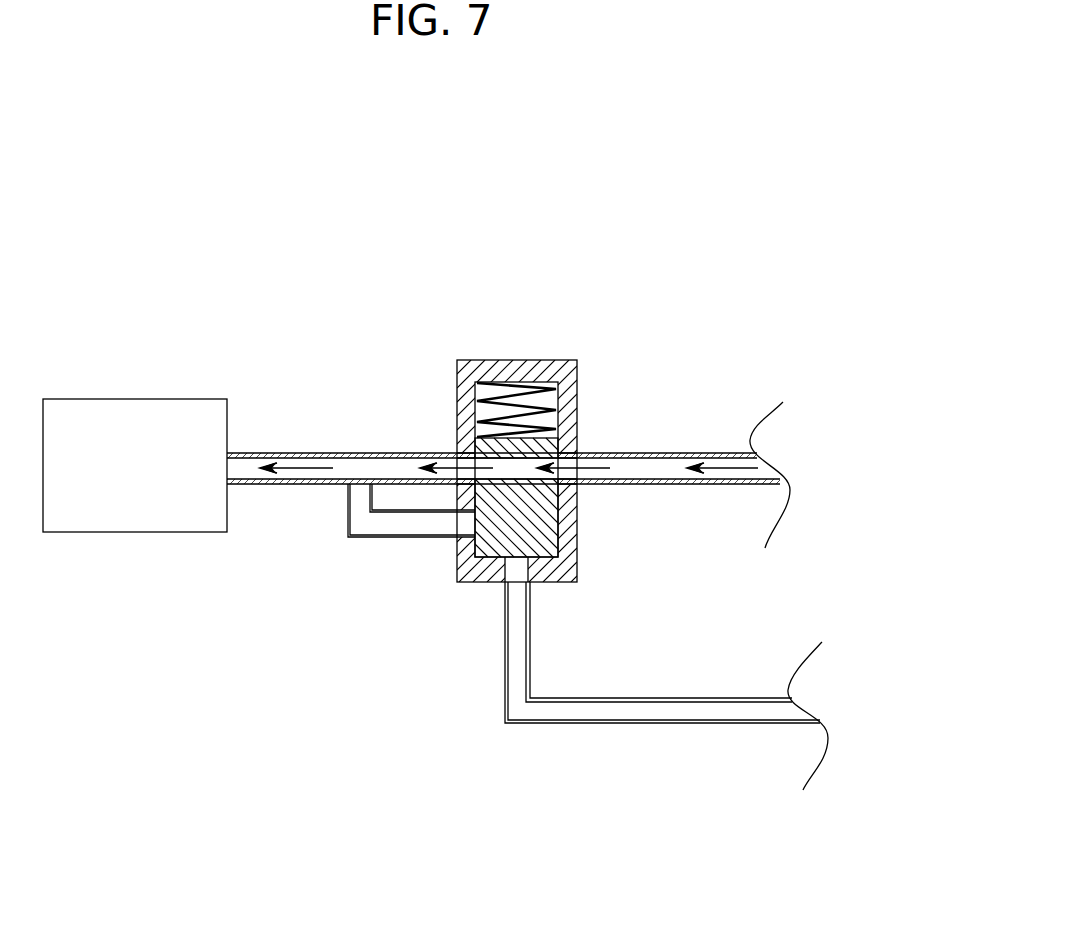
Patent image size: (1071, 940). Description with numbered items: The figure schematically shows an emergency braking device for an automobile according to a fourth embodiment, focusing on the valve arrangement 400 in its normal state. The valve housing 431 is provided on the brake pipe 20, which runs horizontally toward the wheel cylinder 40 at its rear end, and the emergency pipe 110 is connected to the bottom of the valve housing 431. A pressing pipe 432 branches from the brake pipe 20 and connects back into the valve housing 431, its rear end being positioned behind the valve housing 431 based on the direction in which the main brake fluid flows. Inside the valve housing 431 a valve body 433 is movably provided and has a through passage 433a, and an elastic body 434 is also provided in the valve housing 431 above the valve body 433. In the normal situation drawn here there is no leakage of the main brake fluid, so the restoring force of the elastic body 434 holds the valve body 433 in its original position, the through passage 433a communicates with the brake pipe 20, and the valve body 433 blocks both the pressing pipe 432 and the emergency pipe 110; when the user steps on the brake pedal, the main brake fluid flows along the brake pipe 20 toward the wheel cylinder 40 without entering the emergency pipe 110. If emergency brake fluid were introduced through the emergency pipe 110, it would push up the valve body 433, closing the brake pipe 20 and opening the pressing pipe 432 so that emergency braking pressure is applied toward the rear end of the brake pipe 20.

The pressure regulating valve assembly 400 is at (515, 456).
The valve housing 431 is at (457, 378).
The pressing pipe 432 is at (360, 537).
The valve body 433 is at (527, 518).
The through passage 433a is at (522, 466).
The elastic body 434 is at (503, 392).
The brake pipe 20 is at (666, 453).
The wheel cylinder 40 is at (123, 505).
The emergency pipe 110 is at (700, 723).